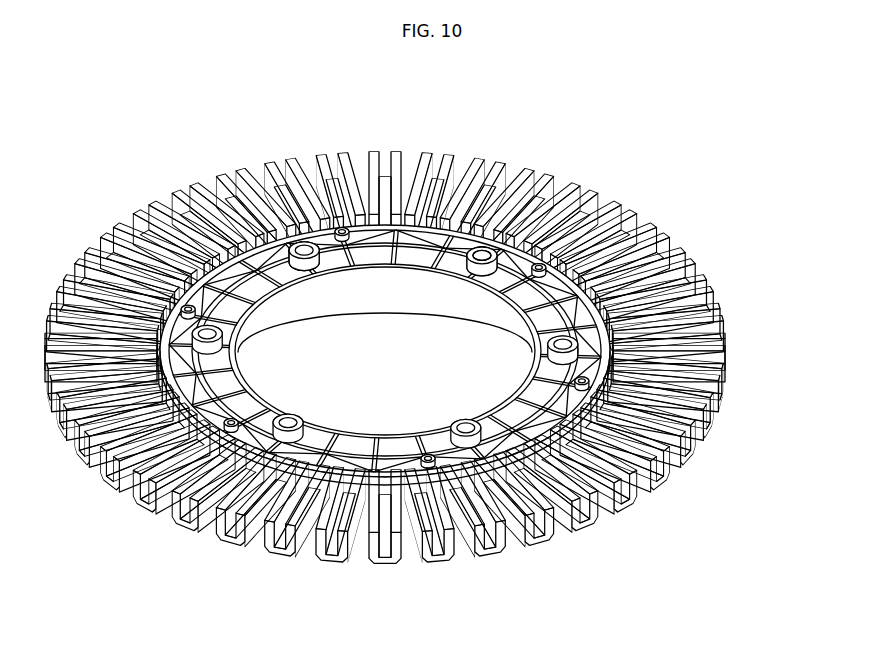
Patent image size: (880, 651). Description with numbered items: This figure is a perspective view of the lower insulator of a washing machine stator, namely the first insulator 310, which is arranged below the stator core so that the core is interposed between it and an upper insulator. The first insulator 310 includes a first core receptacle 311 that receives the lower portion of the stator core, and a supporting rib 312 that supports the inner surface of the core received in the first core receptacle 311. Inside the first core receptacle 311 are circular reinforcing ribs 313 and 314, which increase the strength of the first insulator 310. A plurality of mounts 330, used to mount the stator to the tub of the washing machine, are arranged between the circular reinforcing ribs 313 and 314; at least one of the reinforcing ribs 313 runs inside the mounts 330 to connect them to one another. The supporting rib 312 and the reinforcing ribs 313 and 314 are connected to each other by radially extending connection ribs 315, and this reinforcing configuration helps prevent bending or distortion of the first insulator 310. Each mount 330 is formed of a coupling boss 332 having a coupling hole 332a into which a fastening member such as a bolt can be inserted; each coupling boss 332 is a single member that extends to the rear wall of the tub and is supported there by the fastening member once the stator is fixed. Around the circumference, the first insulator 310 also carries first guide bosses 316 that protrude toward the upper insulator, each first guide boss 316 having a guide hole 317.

The first insulator 310 is at (675, 203).
The first core receptacle 311 is at (620, 349).
The supporting rib 312 is at (608, 382).
The circular reinforcing rib 313 is at (378, 291).
The circular reinforcing rib 314 is at (541, 290).
The connection rib 315 is at (598, 456).
The first guide boss 316 is at (352, 232).
The guide hole 317 is at (530, 237).
The mount 330 is at (315, 275).
The coupling boss 332 is at (305, 265).
The coupling hole 332a is at (463, 256).